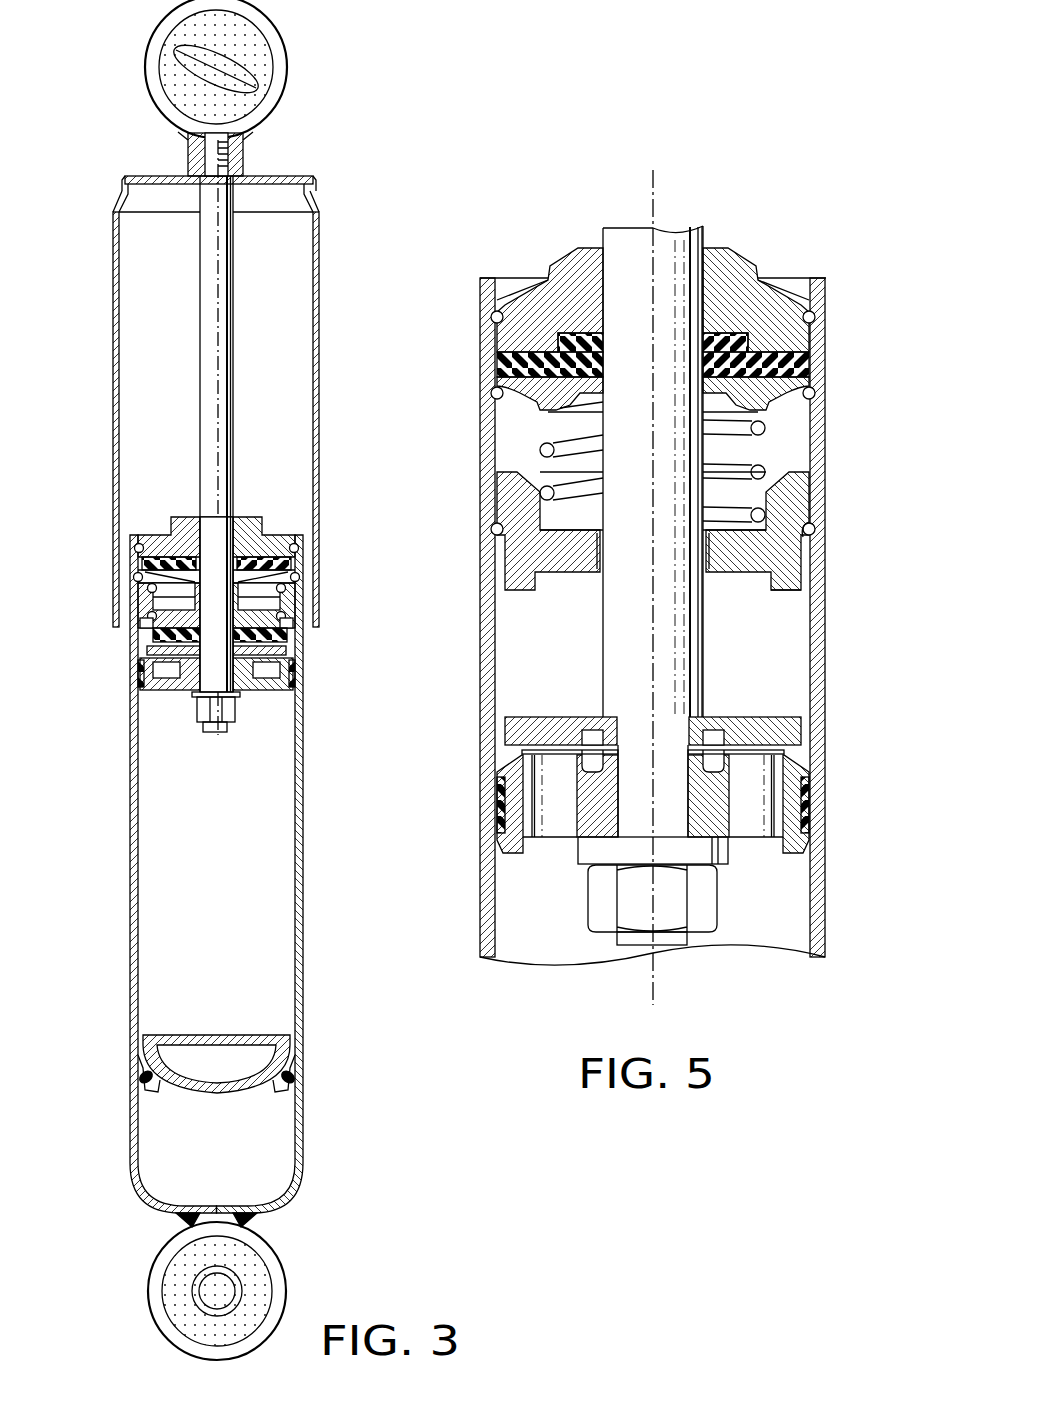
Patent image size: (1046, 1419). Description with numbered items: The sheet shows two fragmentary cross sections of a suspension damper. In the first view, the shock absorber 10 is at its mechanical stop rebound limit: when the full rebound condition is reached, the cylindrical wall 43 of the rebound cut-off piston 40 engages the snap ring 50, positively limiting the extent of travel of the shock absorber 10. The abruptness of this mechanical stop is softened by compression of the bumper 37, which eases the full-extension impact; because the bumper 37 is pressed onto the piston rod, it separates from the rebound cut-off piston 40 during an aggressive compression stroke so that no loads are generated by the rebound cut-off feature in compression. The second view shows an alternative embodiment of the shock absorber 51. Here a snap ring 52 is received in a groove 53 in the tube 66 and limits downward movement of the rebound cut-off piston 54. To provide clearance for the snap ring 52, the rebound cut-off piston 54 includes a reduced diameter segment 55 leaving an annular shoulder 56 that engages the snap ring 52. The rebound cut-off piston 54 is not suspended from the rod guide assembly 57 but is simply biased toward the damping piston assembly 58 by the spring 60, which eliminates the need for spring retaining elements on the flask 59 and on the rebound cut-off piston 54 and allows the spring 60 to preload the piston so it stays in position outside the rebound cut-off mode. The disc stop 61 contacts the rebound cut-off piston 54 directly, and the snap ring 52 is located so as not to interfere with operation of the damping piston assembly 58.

In FIG. 3, the shock absorber 10 is at (104, 460).
In FIG. 3, the bumper 37 is at (150, 640).
In FIG. 3, the rebound cut-off piston 40 is at (220, 624).
In FIG. 3, the cylindrical wall 43 is at (150, 597).
In FIG. 3, the snap ring 50 is at (299, 576).
In FIG. 5, the shock absorber 51 is at (644, 344).
In FIG. 5, the snap ring 52 is at (493, 527).
In FIG. 5, the groove 53 is at (816, 535).
In FIG. 5, the rebound cut-off piston 54 is at (667, 537).
In FIG. 5, the reduced diameter segment 55 is at (803, 578).
In FIG. 5, the annular shoulder 56 is at (806, 540).
In FIG. 5, the rod guide assembly 57 is at (496, 338).
In FIG. 5, the damping piston assembly 58 is at (810, 772).
In FIG. 5, the flask 59 is at (518, 396).
In FIG. 5, the spring 60 is at (766, 423).
In FIG. 5, the disc stop 61 is at (794, 737).
In FIG. 5, the tube 66 is at (822, 367).